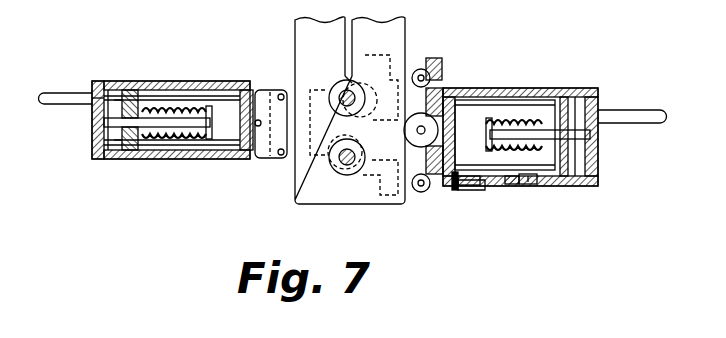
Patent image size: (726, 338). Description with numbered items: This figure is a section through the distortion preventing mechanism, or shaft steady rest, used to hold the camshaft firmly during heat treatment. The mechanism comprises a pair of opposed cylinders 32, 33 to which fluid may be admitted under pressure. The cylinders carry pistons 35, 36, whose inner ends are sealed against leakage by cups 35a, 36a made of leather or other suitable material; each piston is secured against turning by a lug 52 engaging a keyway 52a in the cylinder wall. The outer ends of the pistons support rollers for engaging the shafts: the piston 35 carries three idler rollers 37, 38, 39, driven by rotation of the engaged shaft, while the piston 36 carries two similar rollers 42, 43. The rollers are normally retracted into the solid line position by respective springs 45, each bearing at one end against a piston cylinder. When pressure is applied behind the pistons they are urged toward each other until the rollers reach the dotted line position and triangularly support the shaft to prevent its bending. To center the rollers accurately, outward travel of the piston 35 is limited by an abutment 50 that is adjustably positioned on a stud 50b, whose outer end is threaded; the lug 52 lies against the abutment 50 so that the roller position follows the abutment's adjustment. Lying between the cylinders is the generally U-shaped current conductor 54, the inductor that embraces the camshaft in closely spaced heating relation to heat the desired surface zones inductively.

The cylinder 32 is at (158, 82).
The cup 35a is at (130, 82).
The spring 45 is at (185, 150).
The piston 36 is at (247, 90).
The roller 42 is at (284, 90).
The roller 43 is at (282, 157).
The U-shaped current conductor 54 is at (320, 203).
The idler roller 37 is at (412, 70).
The idler roller 38 is at (443, 90).
The idler roller 39 is at (418, 193).
The cup 36a is at (545, 88).
The piston 35 is at (458, 96).
The cylinder 33 is at (590, 88).
The abutment 50 is at (455, 190).
The stud 50b is at (470, 190).
The keyway 52a is at (512, 186).
The lug 52 is at (526, 186).